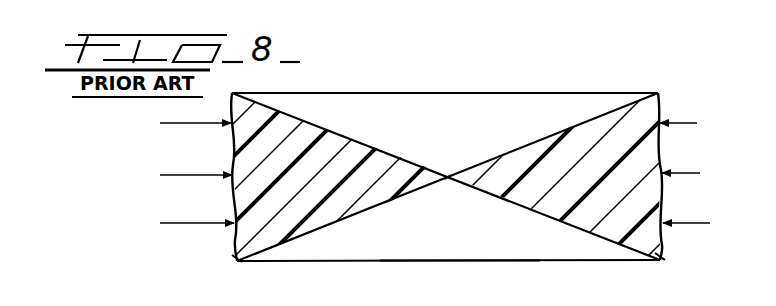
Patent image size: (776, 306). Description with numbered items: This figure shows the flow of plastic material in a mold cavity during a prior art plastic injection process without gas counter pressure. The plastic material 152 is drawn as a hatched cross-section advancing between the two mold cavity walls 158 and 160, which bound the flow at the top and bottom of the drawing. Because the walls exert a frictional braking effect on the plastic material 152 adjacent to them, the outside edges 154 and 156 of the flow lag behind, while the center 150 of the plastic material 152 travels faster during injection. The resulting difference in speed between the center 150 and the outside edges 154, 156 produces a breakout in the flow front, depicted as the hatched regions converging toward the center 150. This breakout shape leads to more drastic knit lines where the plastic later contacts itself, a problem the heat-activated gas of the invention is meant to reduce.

The center 150 is at (452, 177).
The plastic material 152 is at (353, 141).
The outside edge 154 is at (233, 93).
The outside edge 156 is at (237, 261).
The mold cavity wall 158 is at (518, 93).
The mold cavity wall 160 is at (457, 261).